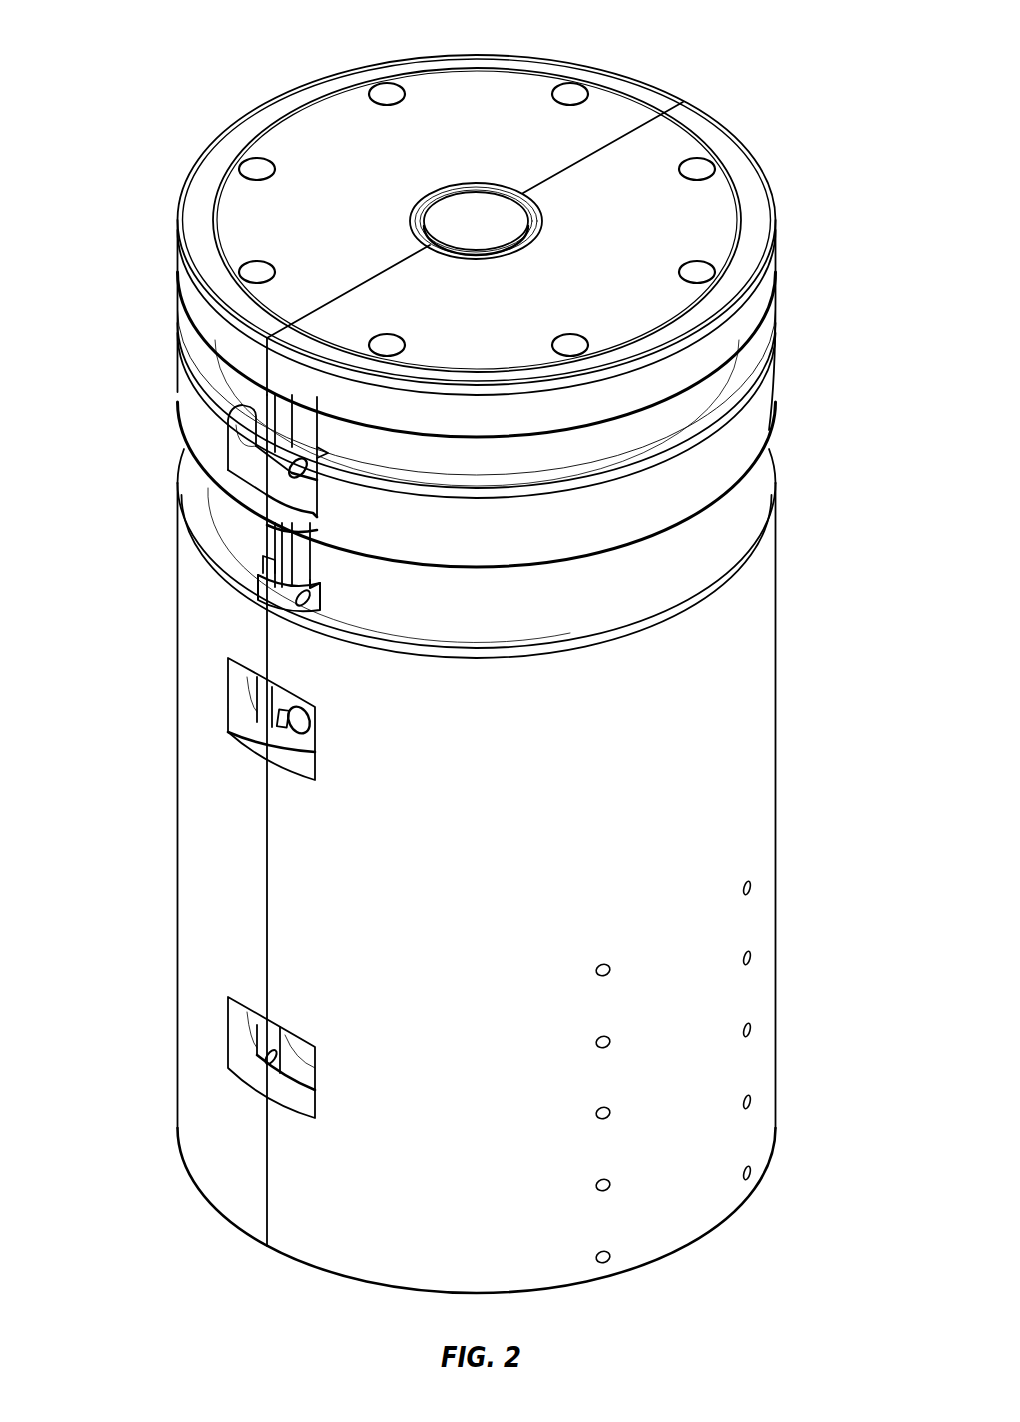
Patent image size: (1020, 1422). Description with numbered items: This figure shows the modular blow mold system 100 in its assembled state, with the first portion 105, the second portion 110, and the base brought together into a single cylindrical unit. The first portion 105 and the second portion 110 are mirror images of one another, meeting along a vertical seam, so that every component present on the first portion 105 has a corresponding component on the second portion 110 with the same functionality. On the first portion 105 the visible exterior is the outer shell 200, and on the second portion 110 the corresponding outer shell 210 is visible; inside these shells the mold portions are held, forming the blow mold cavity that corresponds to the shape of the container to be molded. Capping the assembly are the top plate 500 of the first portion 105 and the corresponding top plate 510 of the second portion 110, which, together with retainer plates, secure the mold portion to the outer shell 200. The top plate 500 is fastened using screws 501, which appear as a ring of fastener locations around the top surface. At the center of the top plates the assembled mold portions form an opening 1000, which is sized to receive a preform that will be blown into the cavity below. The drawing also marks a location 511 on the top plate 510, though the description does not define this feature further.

The modular blow mold system 100 is at (780, 66).
The first portion 105 is at (162, 658).
The second portion 110 is at (794, 659).
The outer shell 200 is at (210, 825).
The outer shell 210 is at (735, 755).
The top plate 500 is at (248, 215).
The screws 501 is at (570, 94).
The top plate 510 is at (700, 217).
The alignment hole 511 is at (697, 273).
The opening 1000 is at (476, 212).